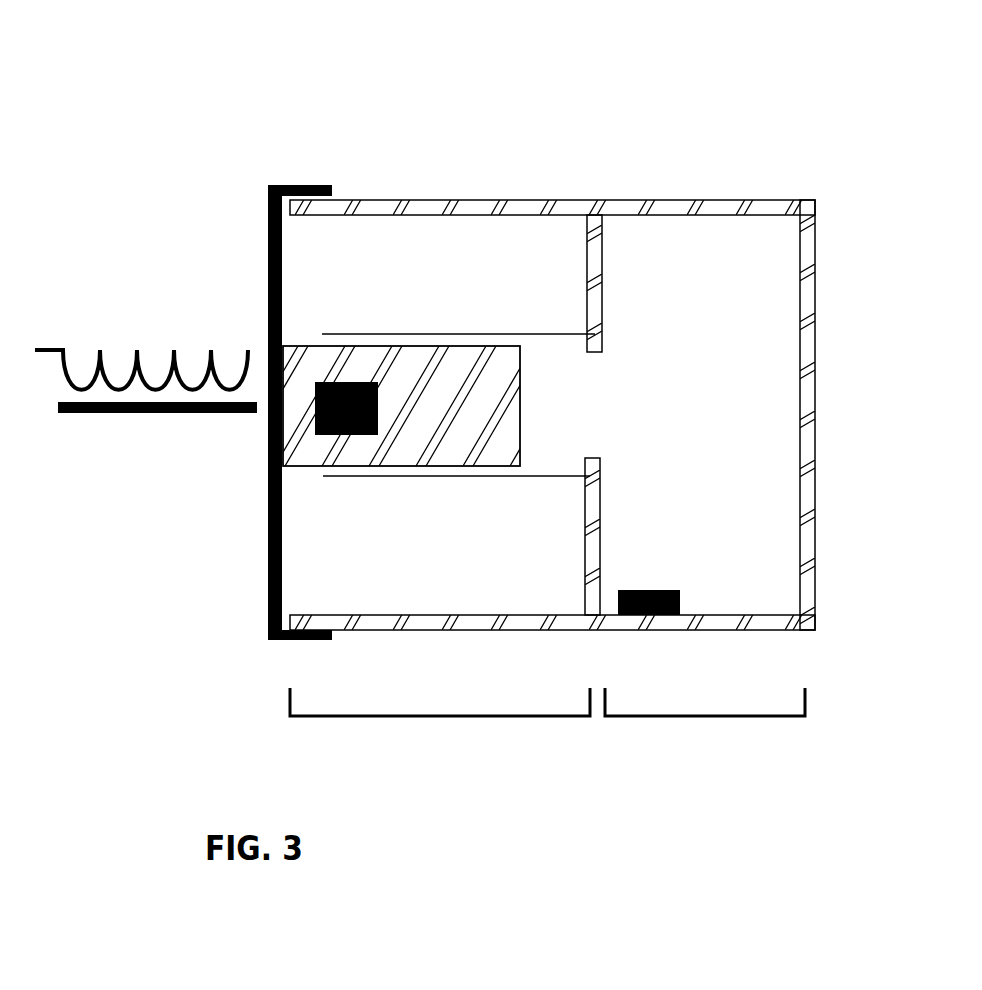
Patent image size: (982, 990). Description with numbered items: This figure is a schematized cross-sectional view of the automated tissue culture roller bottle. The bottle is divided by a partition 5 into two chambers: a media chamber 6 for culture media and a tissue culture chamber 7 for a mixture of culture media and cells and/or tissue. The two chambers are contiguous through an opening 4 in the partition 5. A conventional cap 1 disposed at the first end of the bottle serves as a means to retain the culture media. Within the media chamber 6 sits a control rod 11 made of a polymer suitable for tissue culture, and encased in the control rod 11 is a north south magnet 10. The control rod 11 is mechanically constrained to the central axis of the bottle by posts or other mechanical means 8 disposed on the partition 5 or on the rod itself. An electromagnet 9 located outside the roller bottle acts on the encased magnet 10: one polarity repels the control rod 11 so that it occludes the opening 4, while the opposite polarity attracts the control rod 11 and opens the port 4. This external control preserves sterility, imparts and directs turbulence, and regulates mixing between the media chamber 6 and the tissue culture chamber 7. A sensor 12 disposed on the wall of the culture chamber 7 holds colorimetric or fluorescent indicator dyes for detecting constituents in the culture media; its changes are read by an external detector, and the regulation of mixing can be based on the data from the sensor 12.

The cap 1 is at (268, 187).
The opening 4 is at (608, 388).
The partition 5 is at (602, 248).
The media chamber 6 is at (440, 721).
The tissue culture chamber 7 is at (705, 721).
The mechanical means 8 is at (545, 333).
The electromagnet 9 is at (158, 347).
The north south magnet 10 is at (315, 425).
The control rod 11 is at (408, 438).
The sensor 12 is at (683, 587).